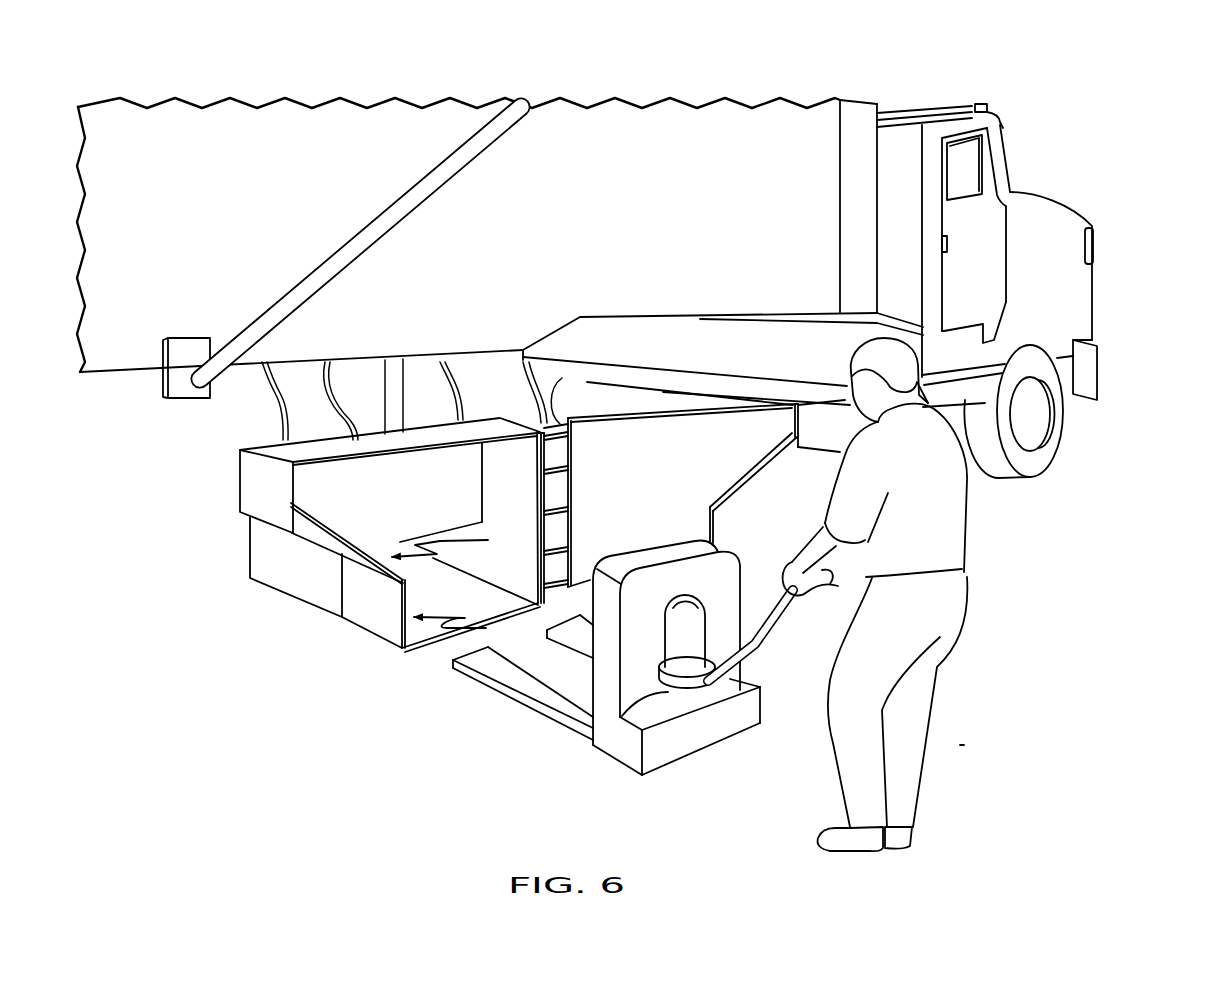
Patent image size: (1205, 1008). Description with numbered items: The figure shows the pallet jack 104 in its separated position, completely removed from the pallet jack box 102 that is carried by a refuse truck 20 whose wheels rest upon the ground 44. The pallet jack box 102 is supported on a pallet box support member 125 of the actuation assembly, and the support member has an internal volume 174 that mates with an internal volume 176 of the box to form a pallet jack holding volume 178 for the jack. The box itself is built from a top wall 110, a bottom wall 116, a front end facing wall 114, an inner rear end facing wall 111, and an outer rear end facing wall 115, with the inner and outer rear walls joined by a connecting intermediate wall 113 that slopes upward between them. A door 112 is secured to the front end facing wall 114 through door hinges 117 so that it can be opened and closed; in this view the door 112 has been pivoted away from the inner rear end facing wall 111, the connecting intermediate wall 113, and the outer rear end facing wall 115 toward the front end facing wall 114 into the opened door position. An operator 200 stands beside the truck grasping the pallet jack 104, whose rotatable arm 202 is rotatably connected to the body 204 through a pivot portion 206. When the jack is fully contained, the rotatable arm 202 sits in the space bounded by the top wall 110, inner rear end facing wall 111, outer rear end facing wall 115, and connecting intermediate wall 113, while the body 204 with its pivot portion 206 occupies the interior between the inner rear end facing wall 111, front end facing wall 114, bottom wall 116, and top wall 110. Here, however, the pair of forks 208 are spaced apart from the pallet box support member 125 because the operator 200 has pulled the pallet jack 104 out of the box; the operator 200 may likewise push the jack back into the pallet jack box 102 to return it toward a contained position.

The refuse truck 20 is at (617, 253).
The ground 44 is at (968, 743).
The pallet jack box 102 is at (364, 531).
The pallet jack 104 is at (621, 673).
The top wall 110 is at (413, 437).
The inner rear end facing wall 111 is at (375, 623).
The door 112 is at (667, 412).
The connecting intermediate wall 113 is at (333, 543).
The front end facing wall 114 is at (543, 498).
The outer rear end facing wall 115 is at (249, 473).
The bottom wall 116 is at (420, 648).
The door hinges 117 is at (560, 360).
The pallet box support member 125 is at (292, 583).
The internal volume 174 is at (447, 544).
The internal volume 176 is at (470, 632).
The pallet jack holding volume 178 is at (512, 458).
The operator 200 is at (943, 594).
The rotatable arm 202 is at (758, 655).
The body 204 is at (728, 543).
The pivot portion 206 is at (678, 688).
The pair of forks 208 is at (530, 692).